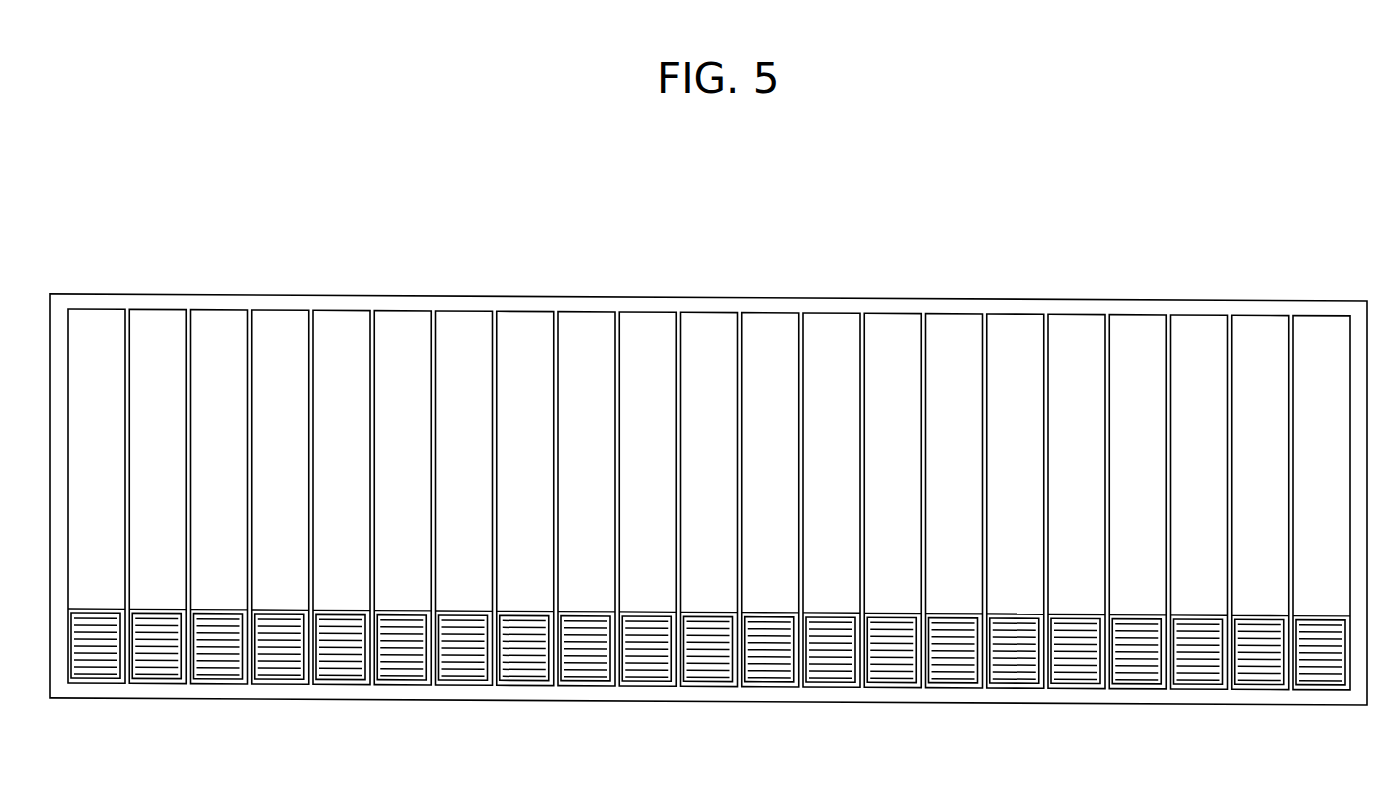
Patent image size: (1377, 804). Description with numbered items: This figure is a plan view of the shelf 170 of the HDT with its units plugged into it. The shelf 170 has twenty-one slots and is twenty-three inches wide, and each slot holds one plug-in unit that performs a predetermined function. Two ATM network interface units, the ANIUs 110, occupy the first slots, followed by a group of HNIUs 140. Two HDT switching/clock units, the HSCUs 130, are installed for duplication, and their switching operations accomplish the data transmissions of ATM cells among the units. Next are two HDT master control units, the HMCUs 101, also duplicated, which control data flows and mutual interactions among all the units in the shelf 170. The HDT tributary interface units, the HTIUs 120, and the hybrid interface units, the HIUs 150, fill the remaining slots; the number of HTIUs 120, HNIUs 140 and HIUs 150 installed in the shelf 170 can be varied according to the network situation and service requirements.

The shelf 170 is at (1002, 292).
The ATM network interface unit (ANIU) 110 is at (188, 701).
The HNIU 140 is at (556, 701).
The HDT switching/clock unit (HSCU) 130 is at (678, 701).
The HDT master control unit (HMCU) 101 is at (801, 701).
The HDT tributary interface unit (HTIU) 120 is at (1046, 701).
The hybrid interface unit (HIU) 150 is at (1350, 701).